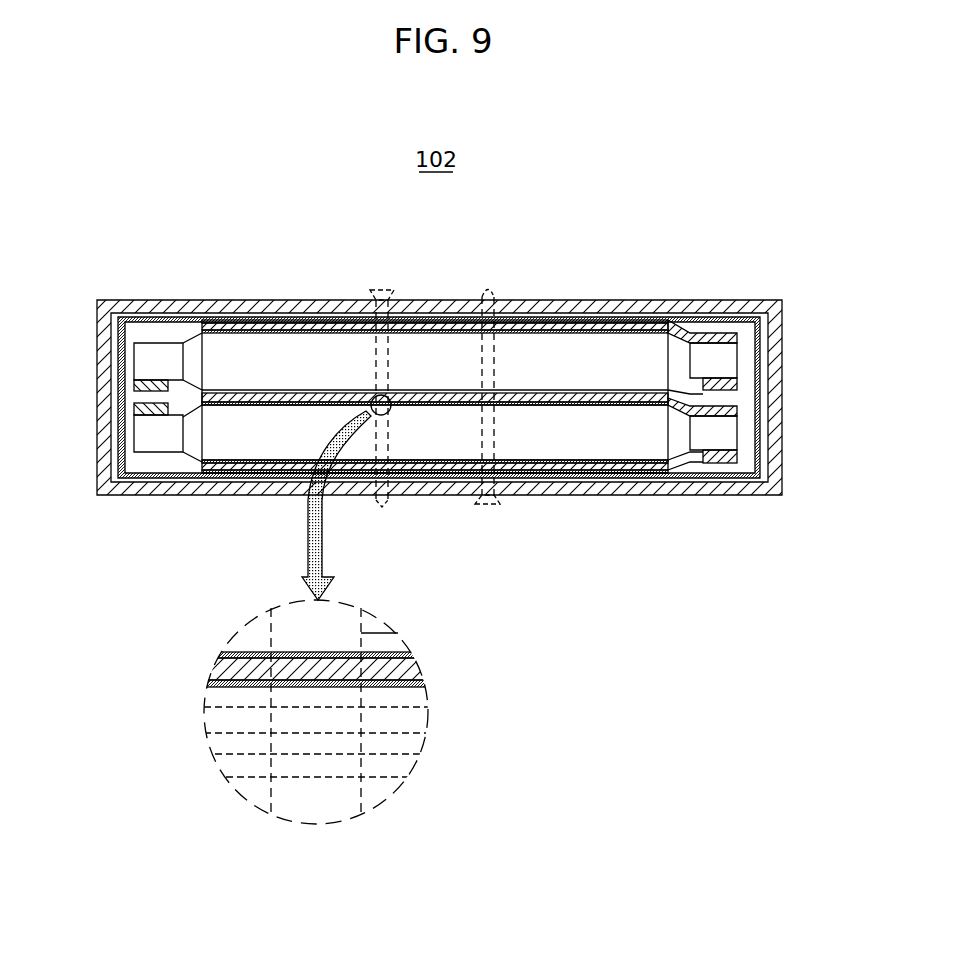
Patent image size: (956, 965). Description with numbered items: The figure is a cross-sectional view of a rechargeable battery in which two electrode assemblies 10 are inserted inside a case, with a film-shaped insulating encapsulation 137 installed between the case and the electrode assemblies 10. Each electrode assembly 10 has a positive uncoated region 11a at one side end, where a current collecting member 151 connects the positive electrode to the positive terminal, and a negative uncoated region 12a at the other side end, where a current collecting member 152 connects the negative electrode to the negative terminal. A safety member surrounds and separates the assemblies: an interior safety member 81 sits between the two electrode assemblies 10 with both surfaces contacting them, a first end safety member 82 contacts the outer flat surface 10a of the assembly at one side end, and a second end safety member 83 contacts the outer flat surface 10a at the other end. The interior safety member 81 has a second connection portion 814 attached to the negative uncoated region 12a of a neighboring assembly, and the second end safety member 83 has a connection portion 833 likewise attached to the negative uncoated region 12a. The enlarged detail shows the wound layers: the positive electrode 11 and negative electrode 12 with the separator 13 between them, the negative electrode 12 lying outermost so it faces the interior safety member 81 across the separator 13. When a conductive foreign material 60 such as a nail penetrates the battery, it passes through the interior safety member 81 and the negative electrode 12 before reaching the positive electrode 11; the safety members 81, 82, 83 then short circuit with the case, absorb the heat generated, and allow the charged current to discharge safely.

The electrode assembly 10 is at (565, 347).
The flat surface 10a is at (403, 472).
The positive electrode 11 is at (400, 771).
The positive uncoated region 11a is at (155, 356).
The negative electrode 12 is at (418, 724).
The negative uncoated region 12a is at (708, 358).
The separator 13 is at (420, 701).
The conductive foreign material 60 is at (383, 288).
The interior safety member 81 is at (620, 412).
The first end safety member 82 is at (546, 484).
The second end safety member 83 is at (622, 316).
The insulating encapsulation 137 is at (262, 321).
The current collecting member 151 is at (150, 414).
The current collecting member 152 is at (718, 462).
The second connection portion 814 is at (696, 455).
The connection portion 833 is at (724, 338).